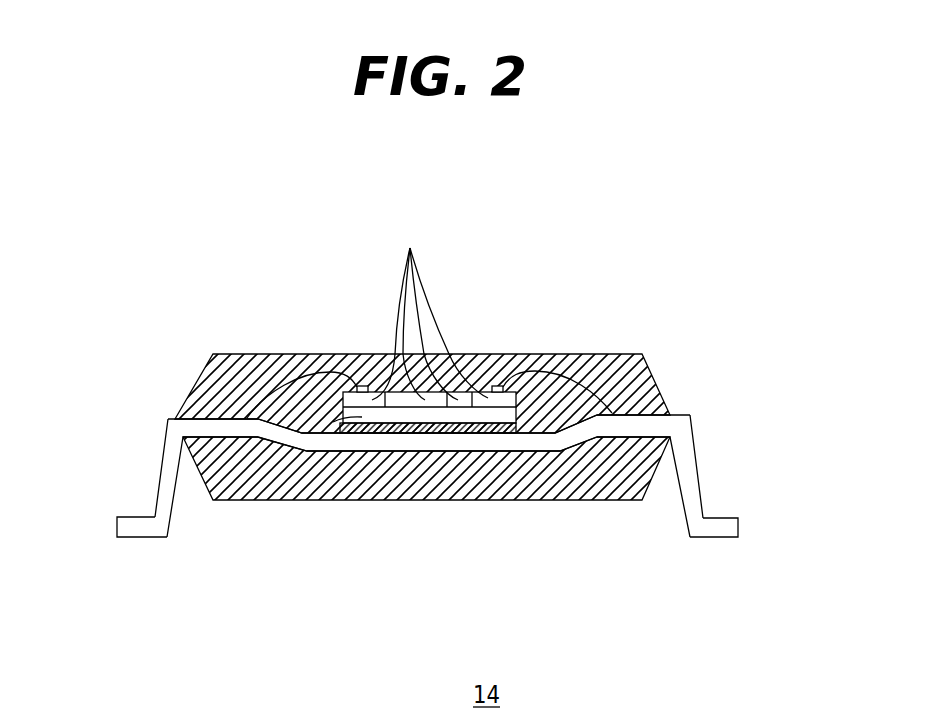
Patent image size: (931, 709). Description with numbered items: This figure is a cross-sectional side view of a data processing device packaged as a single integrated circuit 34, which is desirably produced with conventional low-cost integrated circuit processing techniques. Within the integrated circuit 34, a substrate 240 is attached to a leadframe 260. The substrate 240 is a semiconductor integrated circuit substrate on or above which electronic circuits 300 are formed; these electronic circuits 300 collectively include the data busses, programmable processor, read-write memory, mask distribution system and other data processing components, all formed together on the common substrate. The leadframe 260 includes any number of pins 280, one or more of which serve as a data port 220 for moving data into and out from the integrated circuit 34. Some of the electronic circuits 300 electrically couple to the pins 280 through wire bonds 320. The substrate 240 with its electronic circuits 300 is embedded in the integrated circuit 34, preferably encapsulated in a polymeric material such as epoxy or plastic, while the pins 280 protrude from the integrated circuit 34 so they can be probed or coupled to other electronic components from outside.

The integrated circuit 34 is at (625, 354).
The data port 220 is at (132, 526).
The substrate 240 is at (330, 420).
The leadframe 260 is at (681, 412).
The pins 280 is at (173, 478).
The electronic circuits 300 is at (430, 311).
The wire bonds 320 is at (310, 357).